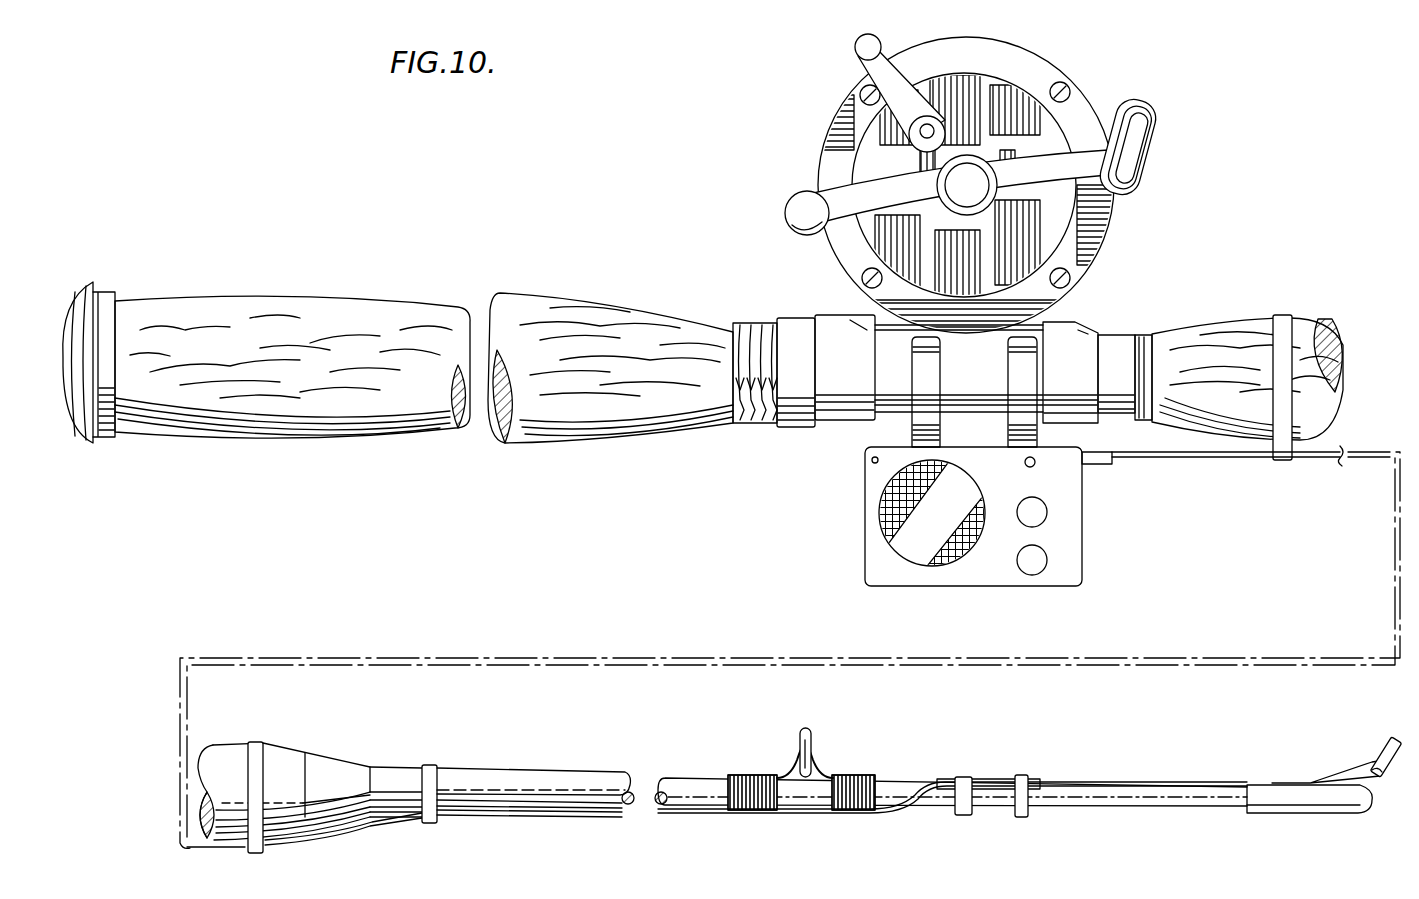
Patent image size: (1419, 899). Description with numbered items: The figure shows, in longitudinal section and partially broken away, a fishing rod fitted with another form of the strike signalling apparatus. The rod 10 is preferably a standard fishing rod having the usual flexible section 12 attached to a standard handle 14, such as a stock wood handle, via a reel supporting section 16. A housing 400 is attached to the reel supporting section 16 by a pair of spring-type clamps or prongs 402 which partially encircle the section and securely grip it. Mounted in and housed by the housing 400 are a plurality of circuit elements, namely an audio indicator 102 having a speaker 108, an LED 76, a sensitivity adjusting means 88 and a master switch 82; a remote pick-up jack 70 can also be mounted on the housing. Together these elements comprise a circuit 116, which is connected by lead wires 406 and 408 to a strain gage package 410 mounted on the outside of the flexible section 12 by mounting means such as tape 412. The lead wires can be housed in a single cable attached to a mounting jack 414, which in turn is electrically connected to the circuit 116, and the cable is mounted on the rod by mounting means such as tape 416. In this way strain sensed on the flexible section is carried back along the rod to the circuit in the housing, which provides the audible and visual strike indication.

The rod 10 is at (601, 233).
The flexible section 12 is at (794, 813).
The handle 14 is at (359, 448).
The reel supporting section 16 is at (1090, 320).
The remote pick-up jack 70 is at (870, 463).
The LED 76 is at (1034, 466).
The master switch 82 is at (1042, 566).
The sensitivity adjusting means 88 is at (1042, 517).
The audio indicator 102 is at (897, 542).
The speaker 108 is at (946, 550).
The circuit 116 is at (993, 562).
The housing 400 is at (956, 542).
The spring-type clamps 402 is at (912, 428).
The lead wire 406 is at (1184, 450).
The lead wire 408 is at (1208, 458).
The strain gage package 410 is at (997, 773).
The tape 412 is at (963, 798).
The mounting jack 414 is at (1100, 452).
The tape 416 is at (432, 775).